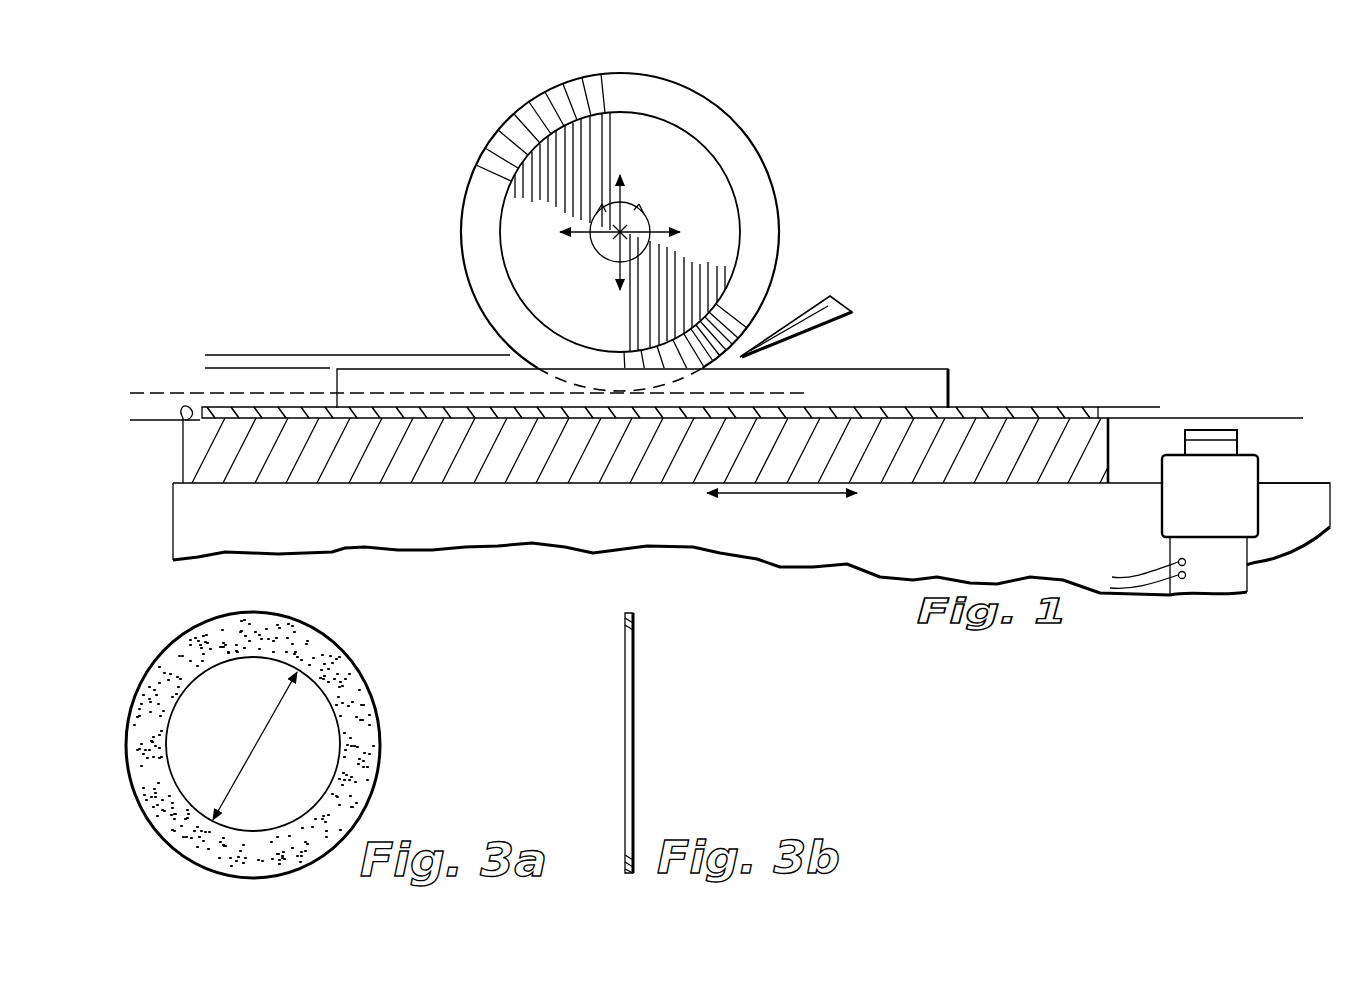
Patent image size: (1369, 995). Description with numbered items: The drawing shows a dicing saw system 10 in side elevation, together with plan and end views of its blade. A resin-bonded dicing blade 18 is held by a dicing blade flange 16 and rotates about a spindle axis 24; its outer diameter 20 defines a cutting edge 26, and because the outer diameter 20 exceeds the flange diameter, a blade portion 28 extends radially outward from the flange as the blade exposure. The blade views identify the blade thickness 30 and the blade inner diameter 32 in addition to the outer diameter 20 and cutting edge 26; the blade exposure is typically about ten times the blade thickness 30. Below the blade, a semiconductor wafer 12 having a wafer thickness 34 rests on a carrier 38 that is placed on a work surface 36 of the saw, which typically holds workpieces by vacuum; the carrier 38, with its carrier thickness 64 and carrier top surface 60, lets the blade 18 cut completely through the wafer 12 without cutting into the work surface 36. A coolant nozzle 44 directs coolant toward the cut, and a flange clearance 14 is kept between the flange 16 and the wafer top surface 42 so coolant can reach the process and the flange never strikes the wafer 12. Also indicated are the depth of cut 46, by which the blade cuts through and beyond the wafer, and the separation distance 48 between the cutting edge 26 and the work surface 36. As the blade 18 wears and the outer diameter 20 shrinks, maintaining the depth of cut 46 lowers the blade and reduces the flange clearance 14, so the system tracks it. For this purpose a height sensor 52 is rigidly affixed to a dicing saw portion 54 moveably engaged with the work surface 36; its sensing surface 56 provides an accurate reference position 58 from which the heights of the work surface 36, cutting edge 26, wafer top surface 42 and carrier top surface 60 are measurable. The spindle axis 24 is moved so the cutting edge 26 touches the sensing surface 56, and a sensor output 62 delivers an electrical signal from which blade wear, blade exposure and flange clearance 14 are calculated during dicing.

In FIG. 1, the dicing saw system 10 is at (573, 520).
In FIG. 1, the semiconductor wafer 12 is at (903, 382).
In FIG. 1, the flange clearance 14 is at (220, 393).
In FIG. 1, the dicing blade flange 16 is at (722, 252).
In FIG. 1, the resin-bonded dicing blade 18 is at (777, 243).
In FIG. 3A, the resin-bonded dicing blade 18 is at (330, 656).
In FIG. 3B, the resin-bonded dicing blade 18 is at (633, 665).
In FIG. 1, the outer diameter 20 is at (778, 205).
In FIG. 3A, the outer diameter 20 is at (378, 745).
In FIG. 1, the spindle axis 24 is at (620, 232).
In FIG. 1, the cutting edge 26 is at (467, 262).
In FIG. 3A, the cutting edge 26 is at (366, 820).
In FIG. 3B, the cutting edge 26 is at (624, 872).
In FIG. 1, the blade portion 28 is at (740, 200).
In FIG. 3B, the blade thickness 30 is at (590, 797).
In FIG. 3A, the blade inner diameter 32 is at (247, 756).
In FIG. 1, the wafer thickness 34 is at (977, 438).
In FIG. 1, the work surface 36 is at (149, 420).
In FIG. 1, the carrier 38 is at (245, 414).
In FIG. 1, the wafer top surface 42 is at (845, 368).
In FIG. 1, the coolant nozzle 44 is at (828, 302).
In FIG. 1, the depth of cut 46 is at (793, 430).
In FIG. 1, the separation distance 48 is at (149, 360).
In FIG. 1, the height sensor 52 is at (1240, 485).
In FIG. 1, the dicing saw portion 54 is at (1302, 523).
In FIG. 1, the sensing surface 56 is at (1213, 431).
In FIG. 1, the reference position 58 is at (1238, 428).
In FIG. 1, the carrier top surface 60 is at (1010, 406).
In FIG. 1, the sensor output 62 is at (1172, 570).
In FIG. 1, the carrier thickness 64 is at (1138, 450).